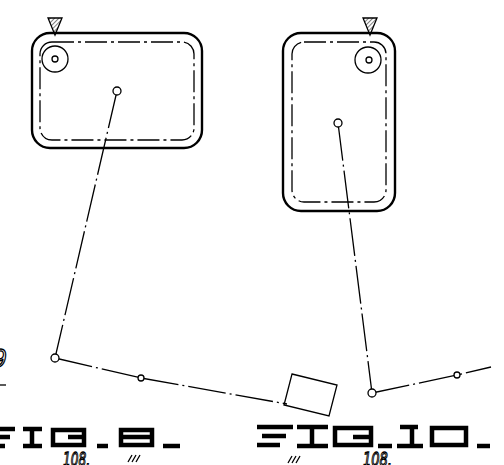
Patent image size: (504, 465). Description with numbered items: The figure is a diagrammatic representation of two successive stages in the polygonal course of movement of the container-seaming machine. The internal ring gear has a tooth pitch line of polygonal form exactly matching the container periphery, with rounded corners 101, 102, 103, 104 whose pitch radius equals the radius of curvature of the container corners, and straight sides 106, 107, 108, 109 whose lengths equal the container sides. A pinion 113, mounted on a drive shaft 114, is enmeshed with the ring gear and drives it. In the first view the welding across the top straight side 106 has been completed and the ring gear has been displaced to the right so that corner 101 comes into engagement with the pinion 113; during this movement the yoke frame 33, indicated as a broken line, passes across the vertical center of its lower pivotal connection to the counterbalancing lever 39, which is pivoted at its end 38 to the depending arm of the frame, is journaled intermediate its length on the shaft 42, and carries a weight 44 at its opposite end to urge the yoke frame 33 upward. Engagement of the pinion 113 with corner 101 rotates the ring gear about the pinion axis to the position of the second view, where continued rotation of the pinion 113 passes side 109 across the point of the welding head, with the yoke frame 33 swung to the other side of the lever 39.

In FIG. 9, the corner 101 is at (40, 38).
In FIG. 10, the corner 101 is at (394, 43).
In FIG. 9, the corner 102 is at (199, 37).
In FIG. 10, the corner 102 is at (393, 204).
In FIG. 9, the corner 103 is at (193, 147).
In FIG. 10, the corner 103 is at (290, 204).
In FIG. 9, the corner 104 is at (49, 147).
In FIG. 10, the corner 104 is at (291, 38).
In FIG. 9, the straight side 106 is at (126, 29).
In FIG. 10, the straight side 106 is at (396, 115).
In FIG. 9, the straight side 107 is at (203, 97).
In FIG. 10, the straight side 107 is at (333, 212).
In FIG. 9, the straight side 108 is at (145, 148).
In FIG. 10, the straight side 108 is at (283, 125).
In FIG. 9, the straight side 109 is at (33, 95).
In FIG. 10, the straight side 109 is at (339, 33).
In FIG. 9, the pinion 113 is at (66, 66).
In FIG. 10, the pinion 113 is at (361, 71).
In FIG. 9, the drive shaft 114 is at (60, 58).
In FIG. 9, the yoke frame 33 is at (82, 253).
In FIG. 9, the end of counterbalancing lever 38 is at (106, 366).
In FIG. 9, the counterbalancing lever 39 is at (215, 391).
In FIG. 9, the shaft 42 is at (140, 381).
In FIG. 10, the weight 44 is at (309, 383).